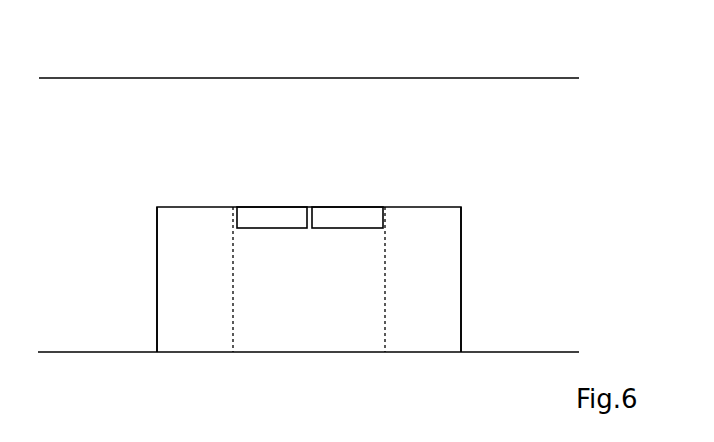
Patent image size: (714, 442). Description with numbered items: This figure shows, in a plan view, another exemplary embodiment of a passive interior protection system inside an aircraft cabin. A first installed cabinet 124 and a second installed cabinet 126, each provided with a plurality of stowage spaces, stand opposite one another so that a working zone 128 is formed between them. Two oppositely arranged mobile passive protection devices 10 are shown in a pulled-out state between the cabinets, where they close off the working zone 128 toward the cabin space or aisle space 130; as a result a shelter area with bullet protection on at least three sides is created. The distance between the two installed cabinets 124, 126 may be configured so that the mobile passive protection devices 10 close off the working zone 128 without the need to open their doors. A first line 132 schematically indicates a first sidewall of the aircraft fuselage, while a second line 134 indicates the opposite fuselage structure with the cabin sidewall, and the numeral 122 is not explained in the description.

The mobile passive protection device 10 is at (262, 205).
The upper layer 122 is at (463, 4).
The first installed cabinet 124 is at (462, 244).
The second installed cabinet 126 is at (156, 239).
The working zone 128 is at (292, 303).
The cabin space or aisle space 130 is at (292, 121).
The first line 132 is at (100, 354).
The second line 134 is at (146, 77).